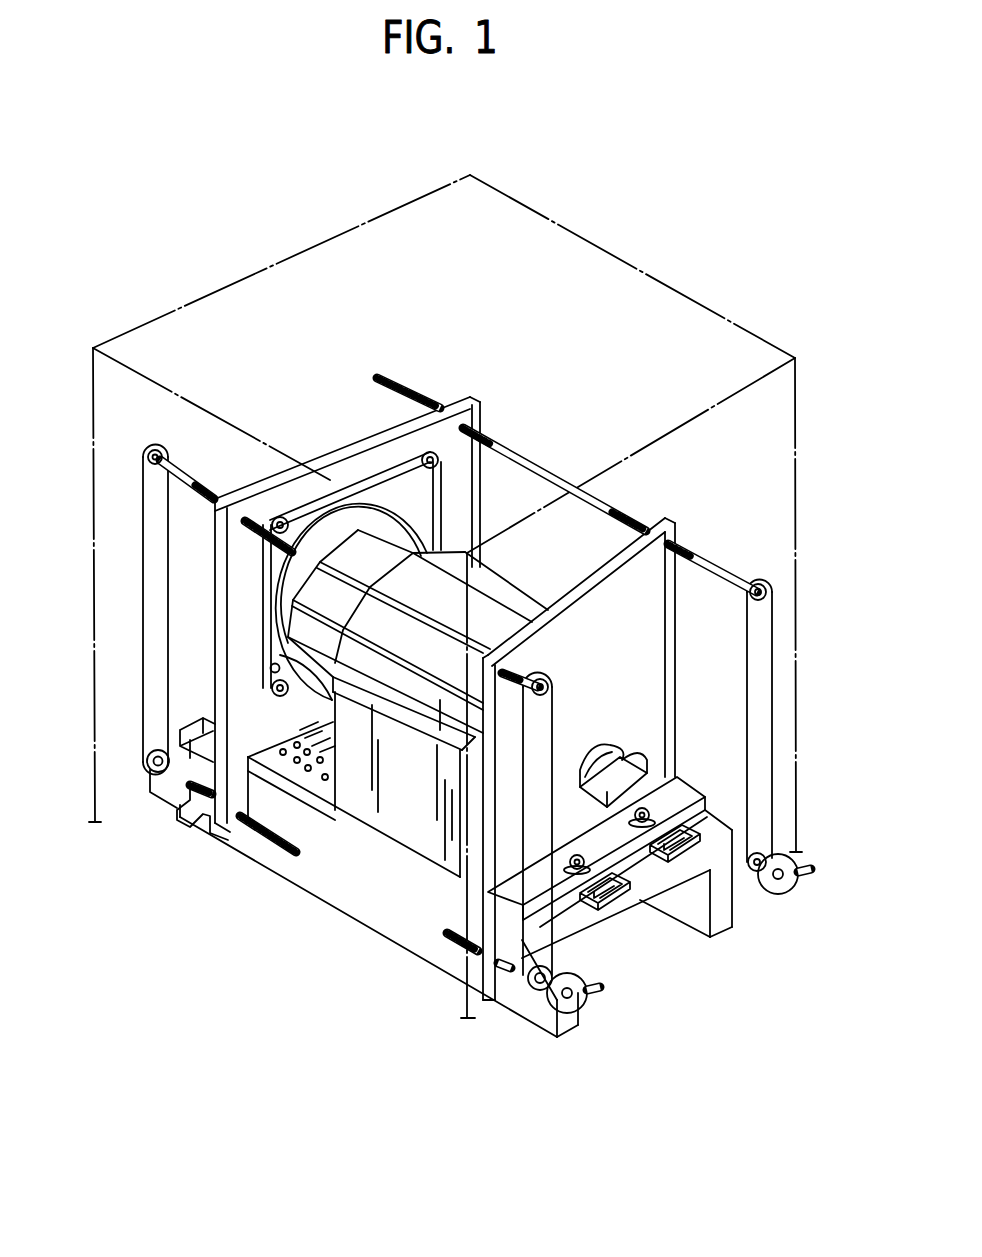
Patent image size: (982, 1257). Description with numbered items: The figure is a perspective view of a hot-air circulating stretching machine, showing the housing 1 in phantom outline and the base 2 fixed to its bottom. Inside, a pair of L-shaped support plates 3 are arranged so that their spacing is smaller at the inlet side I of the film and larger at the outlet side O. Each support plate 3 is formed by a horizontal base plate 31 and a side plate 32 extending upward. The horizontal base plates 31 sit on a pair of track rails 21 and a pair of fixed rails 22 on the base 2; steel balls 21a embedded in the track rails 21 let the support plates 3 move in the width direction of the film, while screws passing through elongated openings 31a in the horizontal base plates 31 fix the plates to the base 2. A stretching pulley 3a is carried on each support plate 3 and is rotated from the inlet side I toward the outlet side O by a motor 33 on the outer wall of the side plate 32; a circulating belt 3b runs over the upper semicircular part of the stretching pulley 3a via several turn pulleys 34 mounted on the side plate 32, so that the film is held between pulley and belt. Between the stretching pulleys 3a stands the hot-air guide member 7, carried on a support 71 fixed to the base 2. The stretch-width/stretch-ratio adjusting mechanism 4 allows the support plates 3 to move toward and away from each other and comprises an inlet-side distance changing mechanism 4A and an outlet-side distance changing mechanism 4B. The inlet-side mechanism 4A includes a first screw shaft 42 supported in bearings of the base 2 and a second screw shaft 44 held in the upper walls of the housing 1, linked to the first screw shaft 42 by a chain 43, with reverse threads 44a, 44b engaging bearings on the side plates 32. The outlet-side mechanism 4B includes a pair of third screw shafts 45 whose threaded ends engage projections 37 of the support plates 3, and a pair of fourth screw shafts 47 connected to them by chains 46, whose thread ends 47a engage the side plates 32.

The housing 1 is at (654, 278).
The base 2 is at (396, 935).
The support plate 3 is at (449, 401).
The stretching pulley 3a is at (320, 693).
The circulating belt 3b is at (430, 492).
The stretch-width/stretch-ratio adjusting mechanism 4 is at (703, 534).
The inlet-side distance changing mechanism 4A is at (731, 558).
The outlet-side distance changing mechanism 4B is at (589, 1012).
The hot-air guide member 7 is at (498, 590).
The track rail 21 is at (712, 822).
The steel balls 21a is at (299, 741).
The fixed rail 22 is at (700, 880).
The horizontal base plate 31 is at (203, 712).
The elongated opening 31a is at (630, 822).
The side plate 32 is at (245, 497).
The motor 33 is at (607, 745).
The turn pulley 34 is at (280, 515).
The projection 37 is at (228, 822).
The first screw shaft 42 is at (770, 890).
The chain 43 is at (745, 680).
The second screw shaft 44 is at (724, 592).
The reverse thread 44a is at (648, 510).
The reverse thread 44b is at (496, 442).
The third screw shaft 45 is at (280, 855).
The chain 46 is at (146, 587).
The fourth screw shaft 47 is at (203, 486).
The thread end 47a is at (250, 515).
The support 71 is at (378, 820).
The inlet side I is at (553, 448).
The outlet side O is at (295, 903).